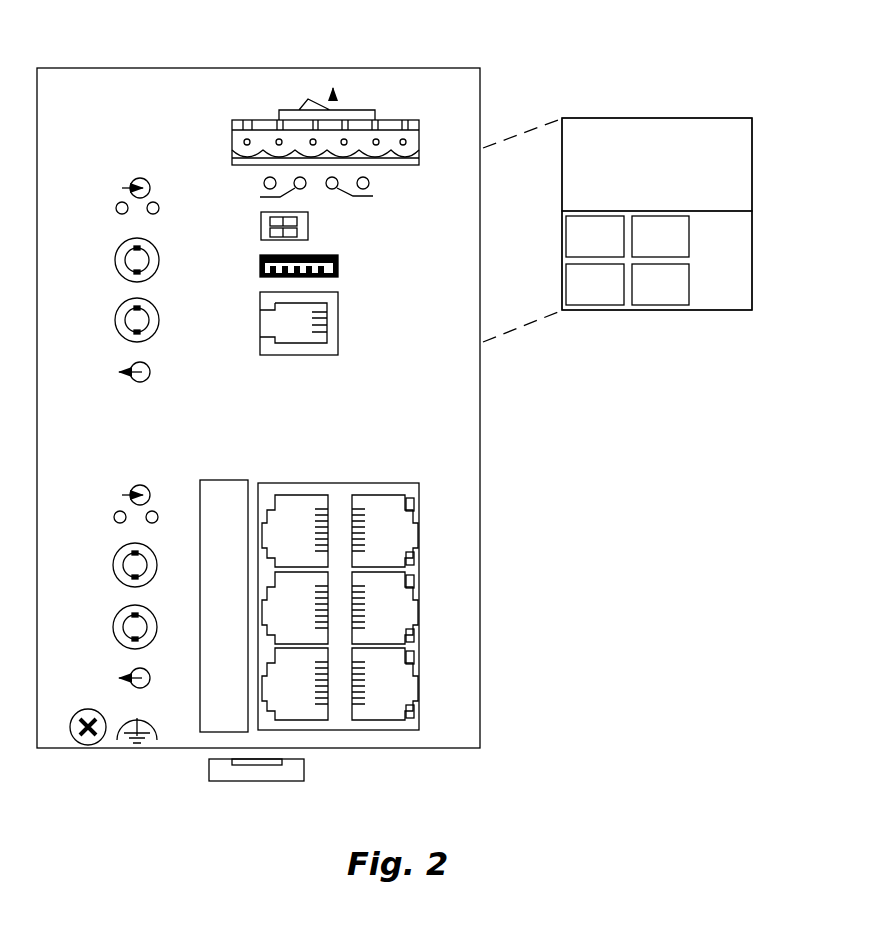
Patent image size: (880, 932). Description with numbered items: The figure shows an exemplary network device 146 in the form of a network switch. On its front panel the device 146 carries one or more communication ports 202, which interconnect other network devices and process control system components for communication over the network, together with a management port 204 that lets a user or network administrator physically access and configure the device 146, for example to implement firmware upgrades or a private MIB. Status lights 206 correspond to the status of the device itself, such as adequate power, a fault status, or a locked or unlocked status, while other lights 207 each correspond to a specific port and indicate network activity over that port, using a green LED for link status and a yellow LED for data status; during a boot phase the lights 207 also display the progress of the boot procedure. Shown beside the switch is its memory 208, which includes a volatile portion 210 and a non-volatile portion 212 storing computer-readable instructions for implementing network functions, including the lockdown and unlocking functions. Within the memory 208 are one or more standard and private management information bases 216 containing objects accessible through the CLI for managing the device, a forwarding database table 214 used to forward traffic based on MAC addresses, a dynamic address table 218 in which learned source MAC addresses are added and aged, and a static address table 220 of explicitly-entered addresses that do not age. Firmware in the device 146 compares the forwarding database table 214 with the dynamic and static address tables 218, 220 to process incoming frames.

The network device 146 is at (251, 54).
The communication ports 202 is at (491, 492).
The management port 204 is at (340, 311).
The status lights 206 is at (257, 191).
The status lights 207 is at (421, 552).
The memory 208 is at (609, 106).
The volatile portion 210 is at (743, 185).
The non-volatile portion 212 is at (743, 278).
The forwarding database table 214 is at (575, 305).
The management information bases 216 is at (570, 252).
The dynamic address table 218 is at (685, 252).
The static address table 220 is at (640, 305).